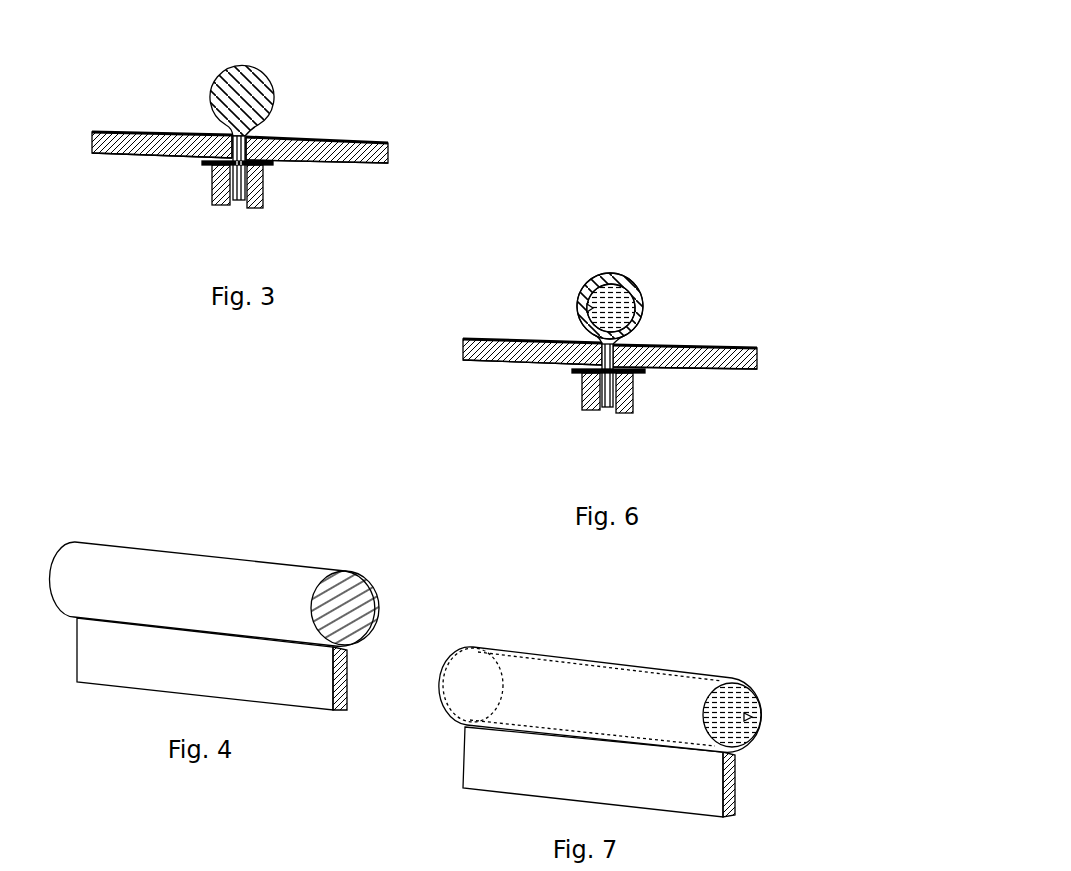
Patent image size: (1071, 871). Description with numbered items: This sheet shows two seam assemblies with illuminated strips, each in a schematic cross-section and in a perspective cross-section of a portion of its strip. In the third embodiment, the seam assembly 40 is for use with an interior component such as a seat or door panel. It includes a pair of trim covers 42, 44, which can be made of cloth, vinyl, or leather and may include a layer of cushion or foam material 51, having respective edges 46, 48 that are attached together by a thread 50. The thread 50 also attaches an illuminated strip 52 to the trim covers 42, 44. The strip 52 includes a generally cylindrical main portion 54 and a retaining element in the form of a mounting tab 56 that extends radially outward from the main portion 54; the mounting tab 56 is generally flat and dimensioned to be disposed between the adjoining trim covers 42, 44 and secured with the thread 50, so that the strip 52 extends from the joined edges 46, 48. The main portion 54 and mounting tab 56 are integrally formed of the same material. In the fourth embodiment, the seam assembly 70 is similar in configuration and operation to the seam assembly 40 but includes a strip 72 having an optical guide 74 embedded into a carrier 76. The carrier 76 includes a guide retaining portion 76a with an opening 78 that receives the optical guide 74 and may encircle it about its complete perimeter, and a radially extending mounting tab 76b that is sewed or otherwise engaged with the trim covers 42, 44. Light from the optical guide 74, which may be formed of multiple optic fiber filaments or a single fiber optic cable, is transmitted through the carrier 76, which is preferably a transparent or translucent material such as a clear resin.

In FIG. 3, the seam assembly 40 is at (457, 87).
In FIG. 3, the trim cover 42 is at (127, 132).
In FIG. 6, the trim cover 42 is at (497, 340).
In FIG. 3, the trim cover 44 is at (356, 141).
In FIG. 6, the trim cover 44 is at (725, 347).
In FIG. 3, the edge 46 is at (230, 135).
In FIG. 3, the edge 48 is at (262, 137).
In FIG. 3, the thread 50 is at (269, 168).
In FIG. 6, the thread 50 is at (638, 375).
In FIG. 3, the layer of cushion or foam material 51 is at (114, 157).
In FIG. 6, the layer of cushion or foam material 51 is at (488, 365).
In FIG. 3, the illuminated strip 52 is at (267, 63).
In FIG. 4, the illuminated strip 52 is at (282, 582).
In FIG. 3, the main portion 54 is at (272, 88).
In FIG. 4, the main portion 54 is at (193, 590).
In FIG. 3, the mounting tab 56 is at (235, 206).
In FIG. 4, the mounting tab 56 is at (147, 663).
In FIG. 6, the seam assembly 70 is at (823, 293).
In FIG. 6, the strip 72 is at (673, 243).
In FIG. 7, the strip 72 is at (668, 597).
In FIG. 6, the optical guide 74 is at (620, 302).
In FIG. 7, the optical guide 74 is at (752, 695).
In FIG. 6, the carrier 76 is at (575, 273).
In FIG. 7, the carrier 76 is at (700, 657).
In FIG. 6, the guide retaining portion 76a is at (600, 280).
In FIG. 7, the guide retaining portion 76a is at (578, 693).
In FIG. 6, the mounting tab 76b is at (603, 412).
In FIG. 7, the mounting tab 76b is at (732, 797).
In FIG. 6, the opening 78 is at (593, 306).
In FIG. 7, the opening 78 is at (750, 717).